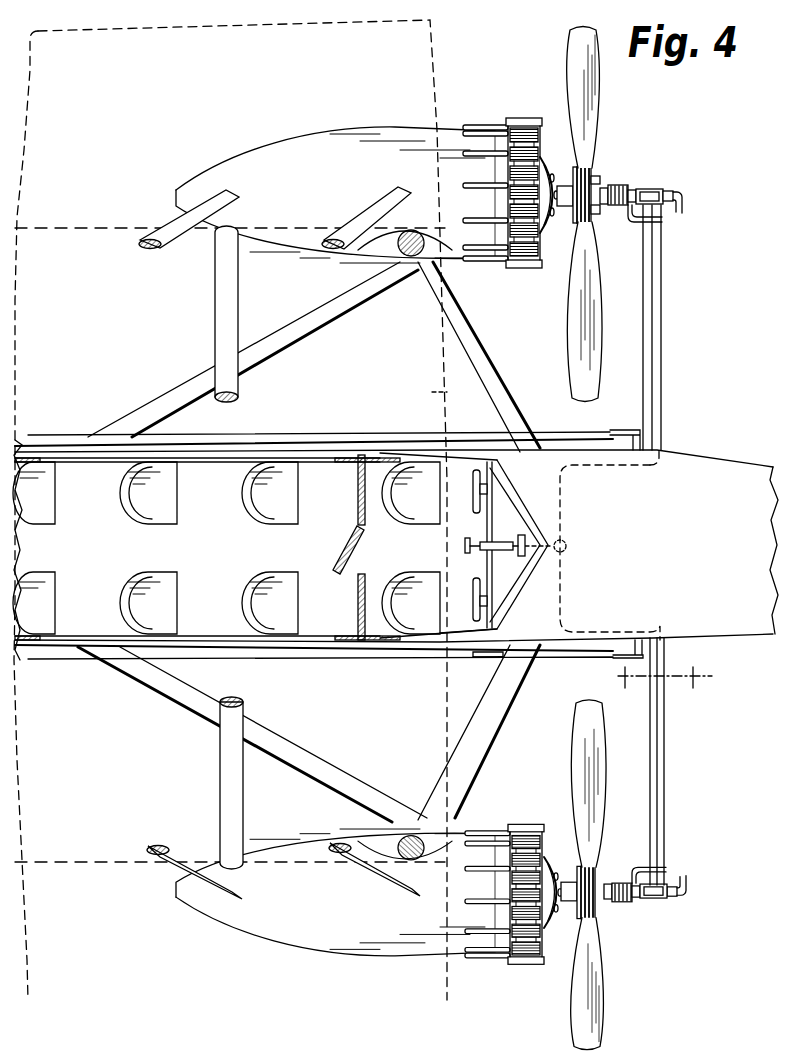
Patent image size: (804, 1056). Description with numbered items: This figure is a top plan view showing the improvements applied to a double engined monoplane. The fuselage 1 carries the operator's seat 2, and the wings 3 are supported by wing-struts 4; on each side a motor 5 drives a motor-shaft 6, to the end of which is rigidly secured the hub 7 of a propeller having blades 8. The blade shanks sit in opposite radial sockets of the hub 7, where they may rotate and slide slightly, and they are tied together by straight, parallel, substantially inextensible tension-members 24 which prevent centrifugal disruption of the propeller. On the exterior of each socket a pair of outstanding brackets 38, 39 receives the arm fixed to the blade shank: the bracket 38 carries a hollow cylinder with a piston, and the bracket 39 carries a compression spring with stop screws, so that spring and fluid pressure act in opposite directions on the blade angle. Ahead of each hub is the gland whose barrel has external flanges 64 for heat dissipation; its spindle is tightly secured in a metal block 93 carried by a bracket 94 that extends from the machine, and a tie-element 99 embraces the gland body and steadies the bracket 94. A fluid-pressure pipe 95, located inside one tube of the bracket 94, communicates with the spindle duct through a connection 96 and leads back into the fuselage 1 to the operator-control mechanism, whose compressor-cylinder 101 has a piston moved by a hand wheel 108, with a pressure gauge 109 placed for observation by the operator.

The fuselage 1 is at (395, 545).
The operator's seat 2 is at (444, 606).
The wings 3 is at (572, 546).
The wing-struts 4 is at (428, 297).
The motor 5 is at (523, 120).
The motor-shaft 6 is at (553, 550).
The hub 7 is at (572, 190).
The blades 8 is at (598, 98).
The tension-members 24 is at (597, 175).
The bracket 38 is at (597, 215).
The bracket 39 is at (602, 177).
The external flanges 64 is at (623, 903).
The metal block 93 is at (653, 188).
The bracket 94 is at (663, 352).
The fluid-pressure pipe 95 is at (680, 873).
The connection 96 is at (674, 195).
The tie-element 99 is at (637, 222).
The compressor-cylinder 101 is at (502, 542).
The hand wheel 108 is at (465, 546).
The pressure gauge 109 is at (521, 556).